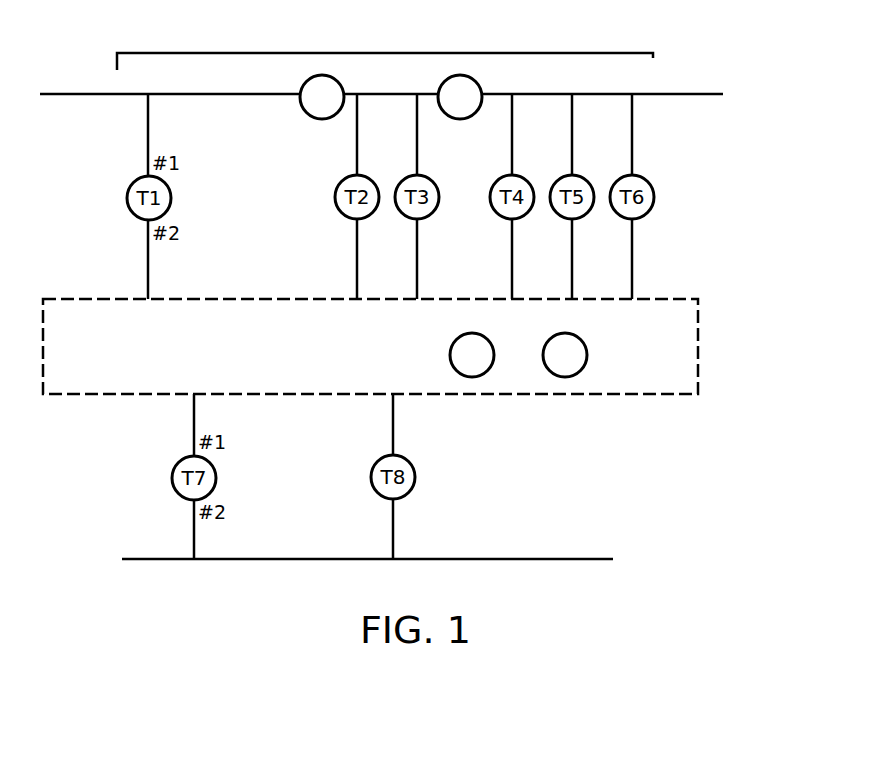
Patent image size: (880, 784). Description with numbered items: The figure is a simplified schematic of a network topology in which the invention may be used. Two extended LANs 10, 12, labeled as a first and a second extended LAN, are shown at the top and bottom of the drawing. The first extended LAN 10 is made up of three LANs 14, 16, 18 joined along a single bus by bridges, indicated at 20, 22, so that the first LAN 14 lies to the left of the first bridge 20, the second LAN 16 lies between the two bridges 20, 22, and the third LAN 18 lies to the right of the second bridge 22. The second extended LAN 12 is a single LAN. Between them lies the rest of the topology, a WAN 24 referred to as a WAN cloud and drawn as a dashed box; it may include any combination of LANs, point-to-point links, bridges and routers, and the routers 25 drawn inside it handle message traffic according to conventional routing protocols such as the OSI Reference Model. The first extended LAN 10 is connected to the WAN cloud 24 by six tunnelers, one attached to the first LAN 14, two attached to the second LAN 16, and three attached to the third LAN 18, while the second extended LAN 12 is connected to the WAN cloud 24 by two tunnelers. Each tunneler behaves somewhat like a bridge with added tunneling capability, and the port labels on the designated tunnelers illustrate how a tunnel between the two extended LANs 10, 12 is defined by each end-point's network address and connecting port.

The extended LAN 10 is at (423, 52).
The extended LAN 12 is at (477, 559).
The LAN 14 is at (201, 94).
The LAN 16 is at (373, 94).
The LAN 18 is at (595, 94).
The bridge 20 is at (320, 119).
The bridge 22 is at (457, 119).
The WAN cloud 24 is at (698, 338).
The router 25 is at (488, 340).